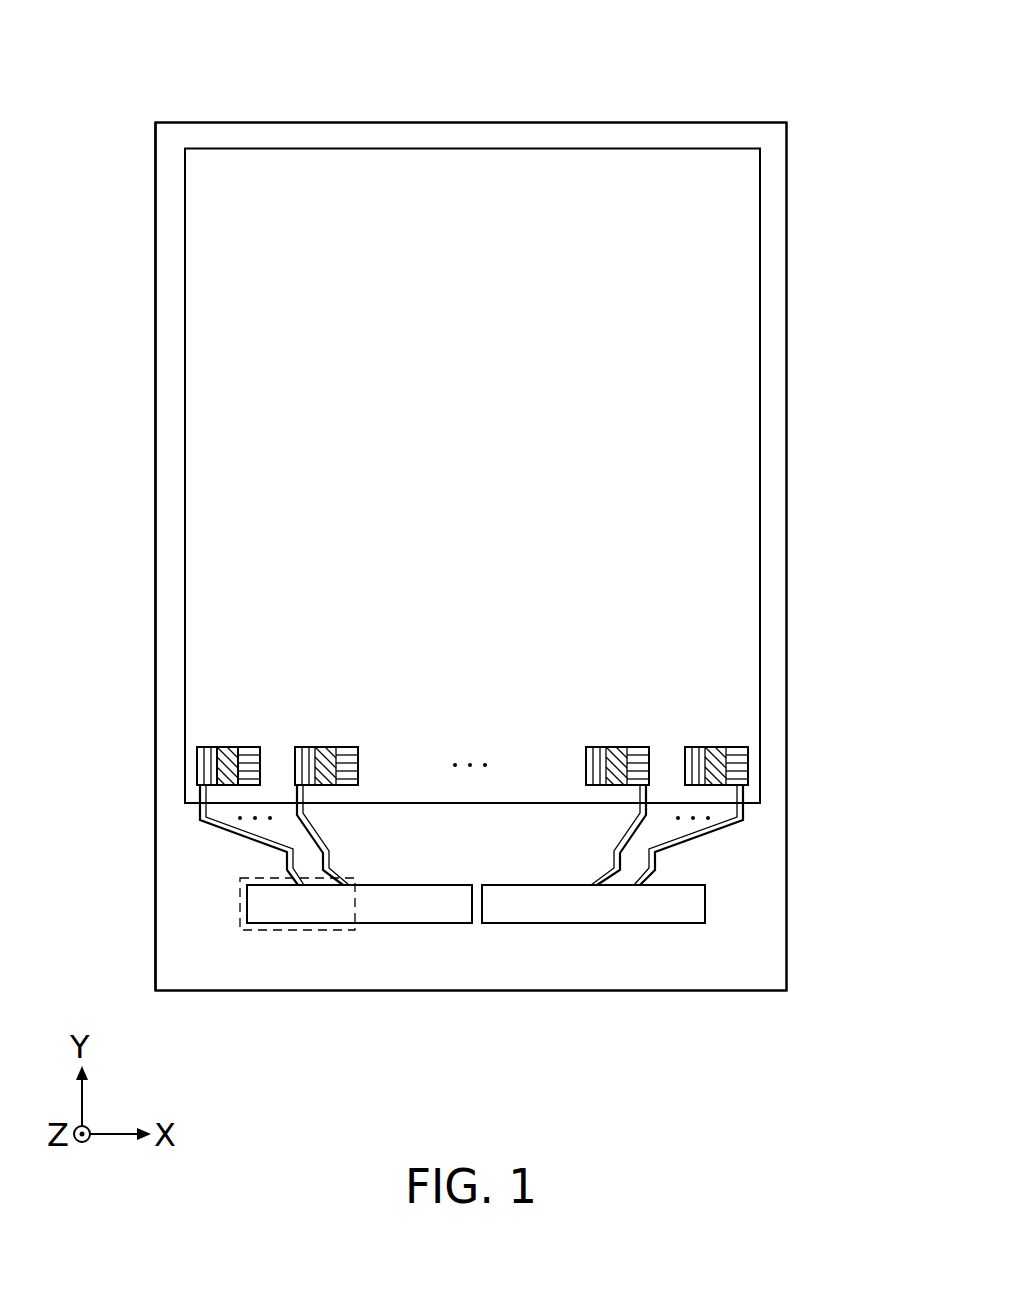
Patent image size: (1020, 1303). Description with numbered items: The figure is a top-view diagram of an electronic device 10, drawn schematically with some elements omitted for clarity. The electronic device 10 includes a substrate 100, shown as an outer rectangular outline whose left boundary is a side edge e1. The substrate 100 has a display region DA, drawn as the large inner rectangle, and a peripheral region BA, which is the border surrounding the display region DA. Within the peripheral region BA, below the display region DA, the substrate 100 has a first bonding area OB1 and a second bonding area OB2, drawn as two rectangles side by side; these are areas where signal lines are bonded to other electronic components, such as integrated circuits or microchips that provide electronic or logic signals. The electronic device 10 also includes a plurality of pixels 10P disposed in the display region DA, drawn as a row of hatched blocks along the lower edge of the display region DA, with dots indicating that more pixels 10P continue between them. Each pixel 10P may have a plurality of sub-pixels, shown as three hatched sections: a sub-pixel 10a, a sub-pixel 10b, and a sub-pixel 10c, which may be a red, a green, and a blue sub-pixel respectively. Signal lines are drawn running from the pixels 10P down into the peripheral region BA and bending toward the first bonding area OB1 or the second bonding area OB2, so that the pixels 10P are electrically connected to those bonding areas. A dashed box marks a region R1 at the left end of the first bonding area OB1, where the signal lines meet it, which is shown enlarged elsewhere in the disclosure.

The electronic device 10 is at (188, 82).
The substrate 100 is at (788, 197).
The side edge e1 is at (150, 545).
The display region DA is at (730, 542).
The peripheral region BA is at (780, 611).
The pixels 10P is at (532, 693).
The sub-pixel 10a is at (213, 747).
The sub-pixel 10b is at (230, 747).
The sub-pixel 10c is at (301, 722).
The region R1 is at (238, 905).
The first bonding area OB1 is at (392, 932).
The second bonding area OB2 is at (597, 932).